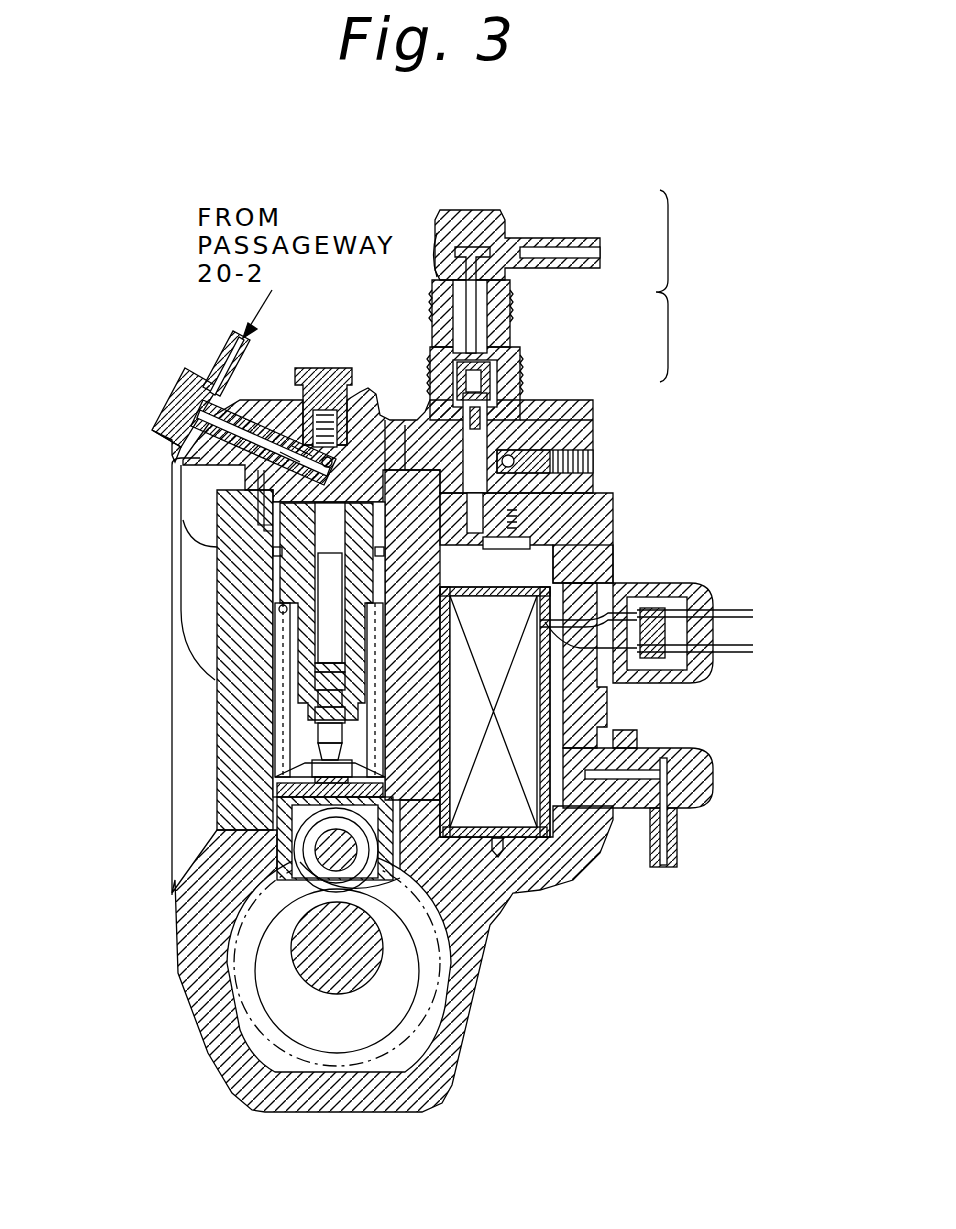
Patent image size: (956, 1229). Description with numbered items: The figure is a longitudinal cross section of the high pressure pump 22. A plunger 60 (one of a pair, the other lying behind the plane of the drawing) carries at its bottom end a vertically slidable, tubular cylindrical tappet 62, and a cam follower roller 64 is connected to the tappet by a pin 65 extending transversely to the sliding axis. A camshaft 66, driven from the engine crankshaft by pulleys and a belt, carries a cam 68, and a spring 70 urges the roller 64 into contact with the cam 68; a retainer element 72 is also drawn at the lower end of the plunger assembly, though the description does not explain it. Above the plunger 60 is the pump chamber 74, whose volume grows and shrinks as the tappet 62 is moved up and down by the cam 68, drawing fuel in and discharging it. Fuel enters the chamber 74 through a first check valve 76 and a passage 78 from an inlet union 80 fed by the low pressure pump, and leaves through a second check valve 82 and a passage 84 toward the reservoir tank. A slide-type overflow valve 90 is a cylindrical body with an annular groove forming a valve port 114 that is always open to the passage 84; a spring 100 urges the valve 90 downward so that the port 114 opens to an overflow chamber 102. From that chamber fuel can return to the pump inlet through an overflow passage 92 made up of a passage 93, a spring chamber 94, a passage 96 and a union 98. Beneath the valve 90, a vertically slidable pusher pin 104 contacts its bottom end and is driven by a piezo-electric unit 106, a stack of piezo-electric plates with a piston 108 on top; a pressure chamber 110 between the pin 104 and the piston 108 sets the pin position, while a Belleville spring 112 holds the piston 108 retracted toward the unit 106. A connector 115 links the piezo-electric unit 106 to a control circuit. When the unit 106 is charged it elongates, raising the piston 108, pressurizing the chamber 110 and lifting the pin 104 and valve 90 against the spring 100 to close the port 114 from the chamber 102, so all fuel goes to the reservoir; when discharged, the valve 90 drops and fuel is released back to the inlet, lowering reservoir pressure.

The high pressure pump 22 is at (737, 401).
The plunger 60 is at (320, 620).
The tappet 62 is at (225, 830).
The cam follower roller 64 is at (280, 870).
The pin 65 is at (430, 878).
The camshaft 66 is at (305, 945).
The cam 68 is at (283, 1022).
The spring 70 is at (300, 700).
The spring retainer plate 72 is at (285, 786).
The pump chamber 74 is at (388, 422).
The first check valve 76 is at (262, 440).
The passage 78 is at (165, 412).
The inlet union 80 is at (222, 356).
The second check valve 82 is at (328, 368).
The passage 84 is at (417, 420).
The overflow valve 90 is at (505, 428).
The overflow passage 92 is at (720, 308).
The passage 93 is at (530, 390).
The spring chamber 94 is at (522, 370).
The passage 96 is at (520, 298).
The union 98 is at (545, 248).
The spring 100 is at (500, 345).
The overflow chamber 102 is at (562, 513).
The pusher pin 104 is at (572, 490).
The piezo-electric unit 106 is at (597, 707).
The piston 108 is at (565, 566).
The pressure chamber 110 is at (572, 538).
The Belleville spring 112 is at (493, 711).
The valve port 114 is at (565, 422).
The connector 115 is at (720, 577).